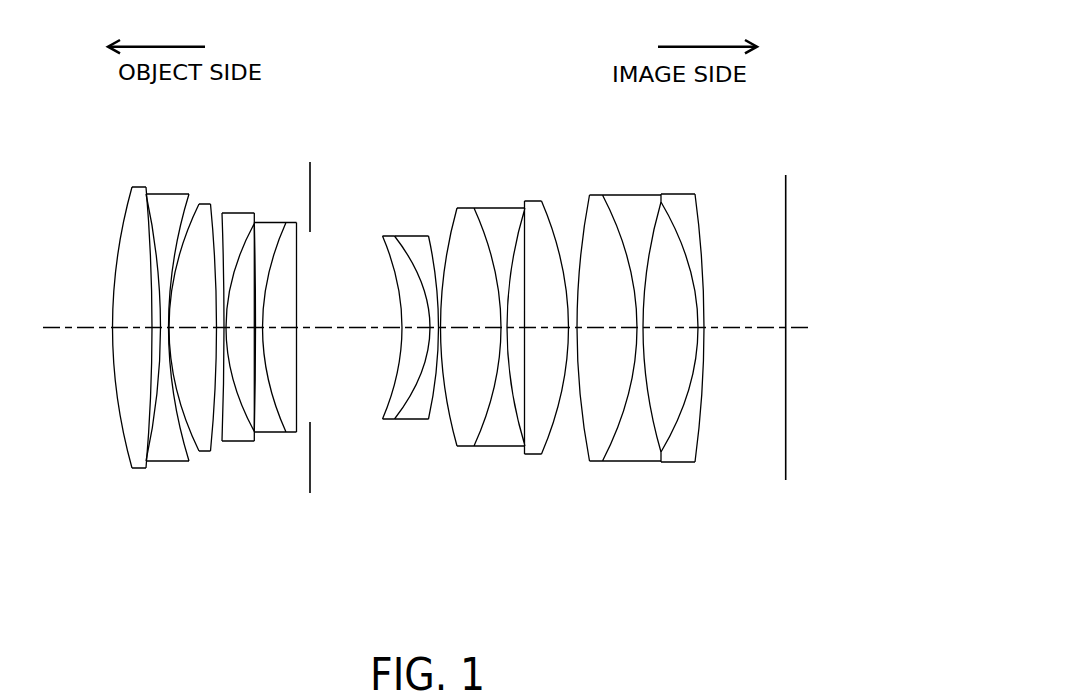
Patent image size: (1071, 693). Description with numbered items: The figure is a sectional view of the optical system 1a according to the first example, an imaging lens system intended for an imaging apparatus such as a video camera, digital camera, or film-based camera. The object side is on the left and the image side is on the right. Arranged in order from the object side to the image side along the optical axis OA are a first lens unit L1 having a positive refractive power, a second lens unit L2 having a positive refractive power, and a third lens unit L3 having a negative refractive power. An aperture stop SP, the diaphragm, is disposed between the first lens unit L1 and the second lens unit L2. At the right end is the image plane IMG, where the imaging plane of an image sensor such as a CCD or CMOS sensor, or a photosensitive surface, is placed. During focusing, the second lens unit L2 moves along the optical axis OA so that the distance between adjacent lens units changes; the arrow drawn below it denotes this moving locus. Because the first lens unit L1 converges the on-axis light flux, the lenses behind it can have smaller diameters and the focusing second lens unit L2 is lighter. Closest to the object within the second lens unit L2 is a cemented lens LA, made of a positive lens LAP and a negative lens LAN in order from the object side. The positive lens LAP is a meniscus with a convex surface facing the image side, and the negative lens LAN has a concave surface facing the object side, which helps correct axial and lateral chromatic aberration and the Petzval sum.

The optical system 1a is at (788, 23).
The optical axis OA is at (70, 327).
The aperture stop SP is at (319, 180).
The image plane IMG is at (772, 172).
The first lens unit L1 is at (212, 611).
The second lens unit L2 is at (463, 363).
The third lens unit L3 is at (640, 611).
The cemented lens LA is at (418, 339).
The positive lens LAP is at (390, 422).
The negative lens LAN is at (438, 362).